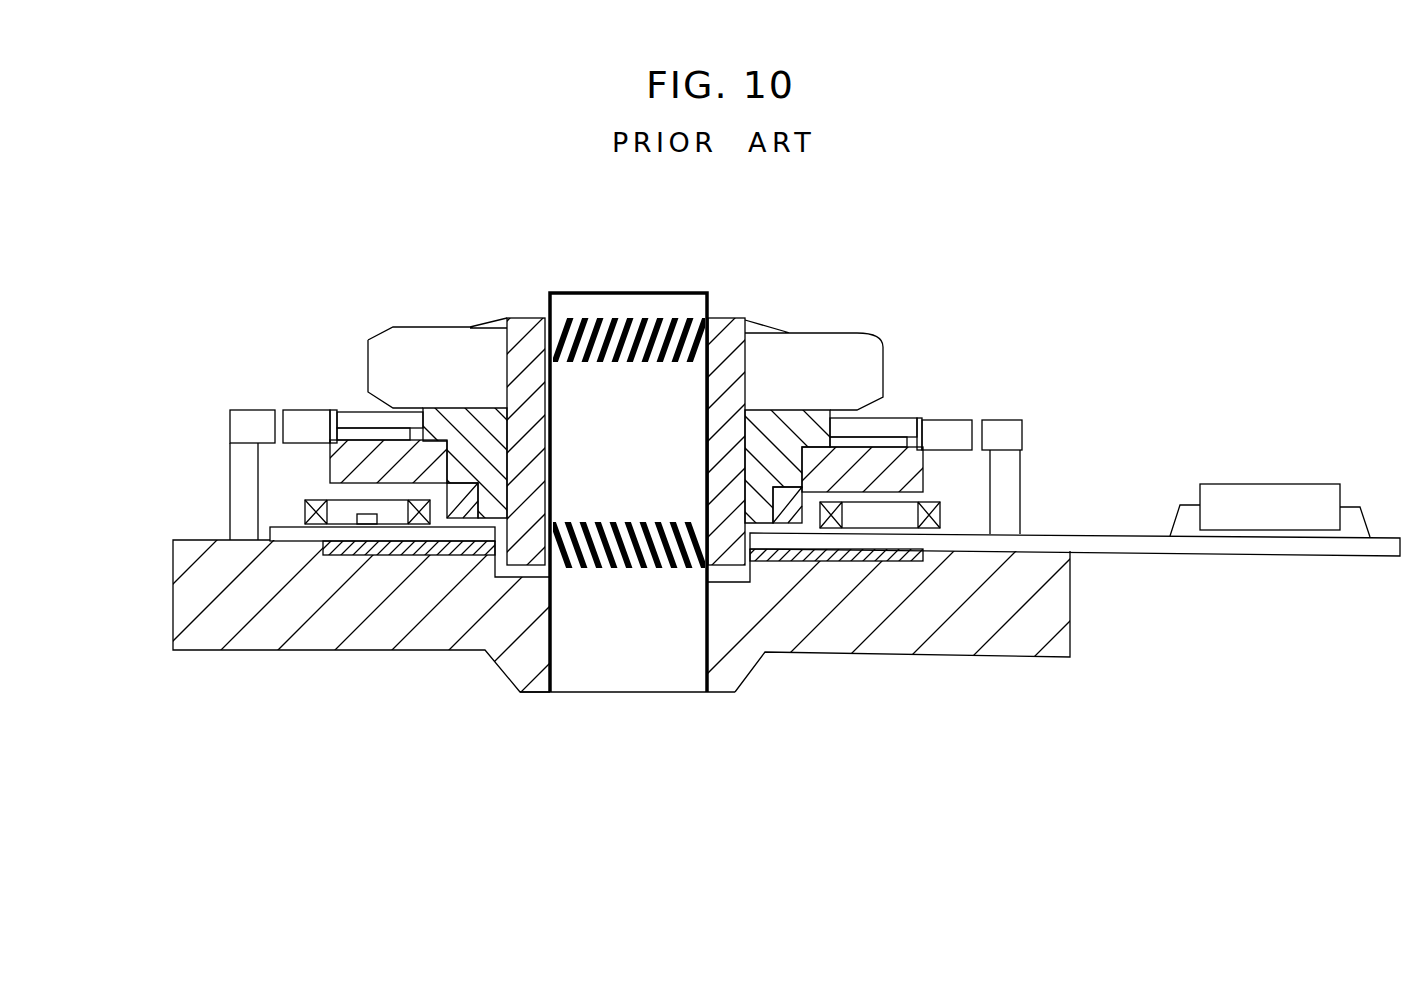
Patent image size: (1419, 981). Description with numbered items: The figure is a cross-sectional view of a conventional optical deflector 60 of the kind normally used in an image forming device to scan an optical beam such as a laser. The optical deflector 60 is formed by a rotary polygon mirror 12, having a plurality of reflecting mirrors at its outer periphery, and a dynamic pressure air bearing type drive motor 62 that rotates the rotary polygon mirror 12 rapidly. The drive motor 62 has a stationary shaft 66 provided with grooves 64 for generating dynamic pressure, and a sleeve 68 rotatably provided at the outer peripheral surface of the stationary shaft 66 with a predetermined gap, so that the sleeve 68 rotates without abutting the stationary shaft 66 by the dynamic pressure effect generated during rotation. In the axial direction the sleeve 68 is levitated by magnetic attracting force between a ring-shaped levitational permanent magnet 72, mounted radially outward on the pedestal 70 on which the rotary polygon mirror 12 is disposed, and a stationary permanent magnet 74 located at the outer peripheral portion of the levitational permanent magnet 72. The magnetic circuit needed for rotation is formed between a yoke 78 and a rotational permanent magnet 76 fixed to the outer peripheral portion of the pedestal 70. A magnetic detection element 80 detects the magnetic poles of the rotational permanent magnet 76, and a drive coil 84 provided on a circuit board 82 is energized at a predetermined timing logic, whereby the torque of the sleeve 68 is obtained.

The optical deflector 60 is at (936, 262).
The dynamic pressure air bearing type drive motor 62 is at (1062, 491).
The grooves 64 is at (637, 363).
The stationary shaft 66 is at (667, 305).
The sleeve 68 is at (530, 315).
The pedestal 70 is at (787, 428).
The rotary polygon mirror 12 is at (873, 382).
The levitational permanent magnet 72 is at (965, 423).
The stationary permanent magnet 74 is at (1023, 428).
The rotational permanent magnet 76 is at (360, 450).
The yoke 78 is at (433, 553).
The magnetic detection element 80 is at (365, 525).
The circuit board 82 is at (1140, 552).
The drive coil 84 is at (303, 513).